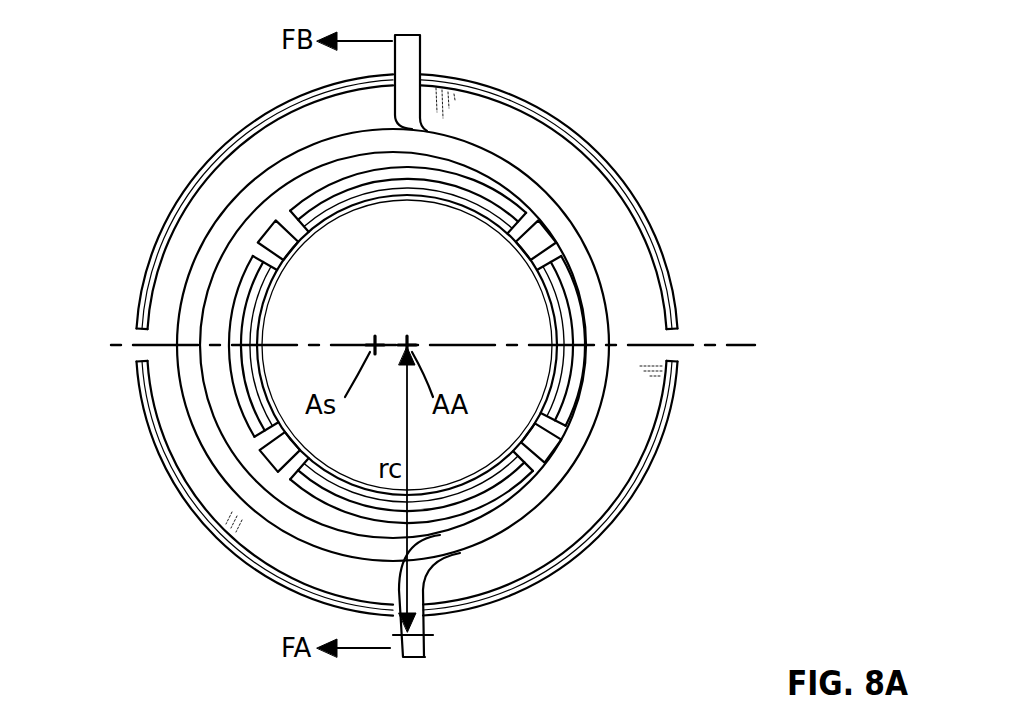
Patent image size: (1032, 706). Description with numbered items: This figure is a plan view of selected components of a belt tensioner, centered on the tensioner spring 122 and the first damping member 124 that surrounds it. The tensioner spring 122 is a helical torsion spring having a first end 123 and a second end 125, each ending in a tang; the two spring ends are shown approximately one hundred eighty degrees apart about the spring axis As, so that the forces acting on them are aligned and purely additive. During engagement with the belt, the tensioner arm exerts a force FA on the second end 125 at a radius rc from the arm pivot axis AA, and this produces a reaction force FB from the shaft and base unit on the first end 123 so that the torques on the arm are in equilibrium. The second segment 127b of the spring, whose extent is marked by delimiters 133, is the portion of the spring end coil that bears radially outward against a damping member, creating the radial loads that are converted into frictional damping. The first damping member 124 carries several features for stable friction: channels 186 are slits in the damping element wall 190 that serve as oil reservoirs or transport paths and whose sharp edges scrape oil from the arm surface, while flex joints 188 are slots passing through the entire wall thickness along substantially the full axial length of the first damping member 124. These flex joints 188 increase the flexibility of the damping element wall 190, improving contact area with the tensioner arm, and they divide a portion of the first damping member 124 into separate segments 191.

The tensioner spring 122 is at (522, 182).
The first end 123 is at (407, 100).
The first damping member 124 is at (565, 515).
The second end 125 is at (433, 636).
The second segment 127b is at (595, 378).
The delimiters 133 is at (584, 266).
The channels 186 is at (462, 200).
The flex joints 188 is at (288, 238).
The damping element wall 190 is at (263, 267).
The segments 191 is at (327, 202).